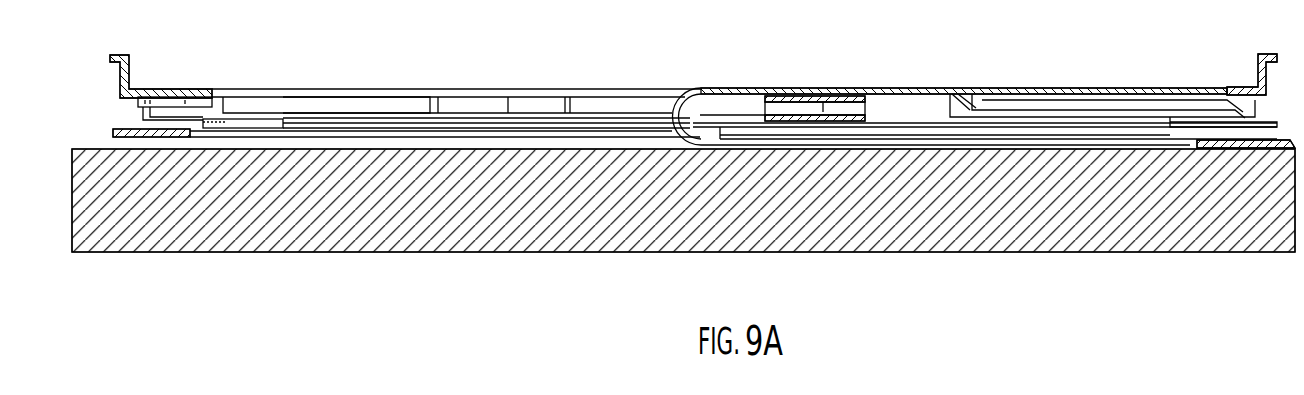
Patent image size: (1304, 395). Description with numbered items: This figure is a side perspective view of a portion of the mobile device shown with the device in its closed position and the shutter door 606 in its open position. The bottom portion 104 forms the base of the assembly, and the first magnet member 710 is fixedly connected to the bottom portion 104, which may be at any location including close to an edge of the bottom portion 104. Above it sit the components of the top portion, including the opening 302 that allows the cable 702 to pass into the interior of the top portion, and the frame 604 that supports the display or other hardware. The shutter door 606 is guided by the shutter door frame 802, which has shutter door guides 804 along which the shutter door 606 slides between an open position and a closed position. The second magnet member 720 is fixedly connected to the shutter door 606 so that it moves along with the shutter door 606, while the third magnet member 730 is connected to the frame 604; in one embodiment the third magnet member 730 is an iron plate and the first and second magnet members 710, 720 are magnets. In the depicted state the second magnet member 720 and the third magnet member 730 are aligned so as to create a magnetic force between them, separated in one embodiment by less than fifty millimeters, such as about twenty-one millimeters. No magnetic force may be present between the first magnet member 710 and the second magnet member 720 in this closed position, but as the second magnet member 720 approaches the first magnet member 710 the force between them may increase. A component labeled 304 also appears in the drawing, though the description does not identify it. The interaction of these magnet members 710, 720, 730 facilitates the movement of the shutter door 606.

The bottom portion 104 is at (290, 215).
The opening 302 is at (283, 140).
The adhesive pad 304 is at (163, 137).
The frame 604 is at (392, 107).
The shutter door 606 is at (1163, 128).
The cable 702 is at (688, 145).
The first magnet member 710 is at (1243, 149).
The second magnet member 720 is at (840, 121).
The third magnet member 730 is at (806, 102).
The shutter door frame 802 is at (1188, 127).
The shutter door guides 804 is at (520, 123).